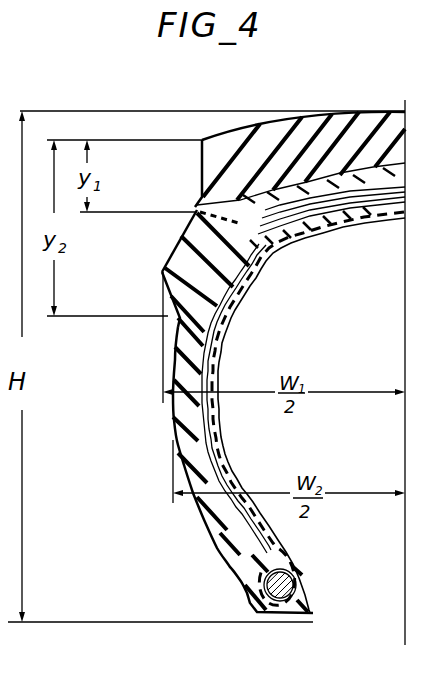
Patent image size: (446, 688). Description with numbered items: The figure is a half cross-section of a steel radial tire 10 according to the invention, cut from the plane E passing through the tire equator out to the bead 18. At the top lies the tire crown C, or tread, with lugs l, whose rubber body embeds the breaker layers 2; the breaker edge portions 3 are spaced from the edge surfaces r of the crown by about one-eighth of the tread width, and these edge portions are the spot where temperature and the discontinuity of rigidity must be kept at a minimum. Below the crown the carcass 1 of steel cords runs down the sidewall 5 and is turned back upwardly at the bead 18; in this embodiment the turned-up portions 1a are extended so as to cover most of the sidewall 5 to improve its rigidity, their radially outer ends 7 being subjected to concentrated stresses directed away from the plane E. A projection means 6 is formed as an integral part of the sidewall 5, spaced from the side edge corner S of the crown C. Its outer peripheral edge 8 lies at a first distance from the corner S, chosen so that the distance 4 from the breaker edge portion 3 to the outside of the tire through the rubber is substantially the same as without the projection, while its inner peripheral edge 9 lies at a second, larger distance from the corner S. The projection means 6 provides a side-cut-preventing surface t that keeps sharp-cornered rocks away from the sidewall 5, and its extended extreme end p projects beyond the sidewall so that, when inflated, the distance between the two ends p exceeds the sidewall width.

The tire 10 is at (234, 125).
The breaker layers 2 is at (371, 175).
The breaker edge portions 3 is at (292, 152).
The distance from breaker edge portion to outside of tire 4 is at (195, 209).
The carcass 1 is at (283, 248).
The outer peripheral edge of projection means 8 is at (256, 274).
The radially outer ends of reinforcing cords 7 is at (246, 285).
The inner peripheral edge of projection means 9 is at (217, 338).
The turned-up portions of carcass steel cords 1a is at (200, 335).
The projection means 6 is at (178, 314).
The sidewall 5 is at (185, 432).
The tire bead 18 is at (300, 590).
The side edge corner of tire crown S is at (202, 140).
The plane passing through tire equator E is at (405, 375).
The tire crown C is at (324, 143).
The lugs l is at (272, 128).
The edge surfaces of the crown r is at (198, 175).
The side-cut-preventing surface t is at (176, 237).
The extended extreme ends of projection means p is at (163, 272).